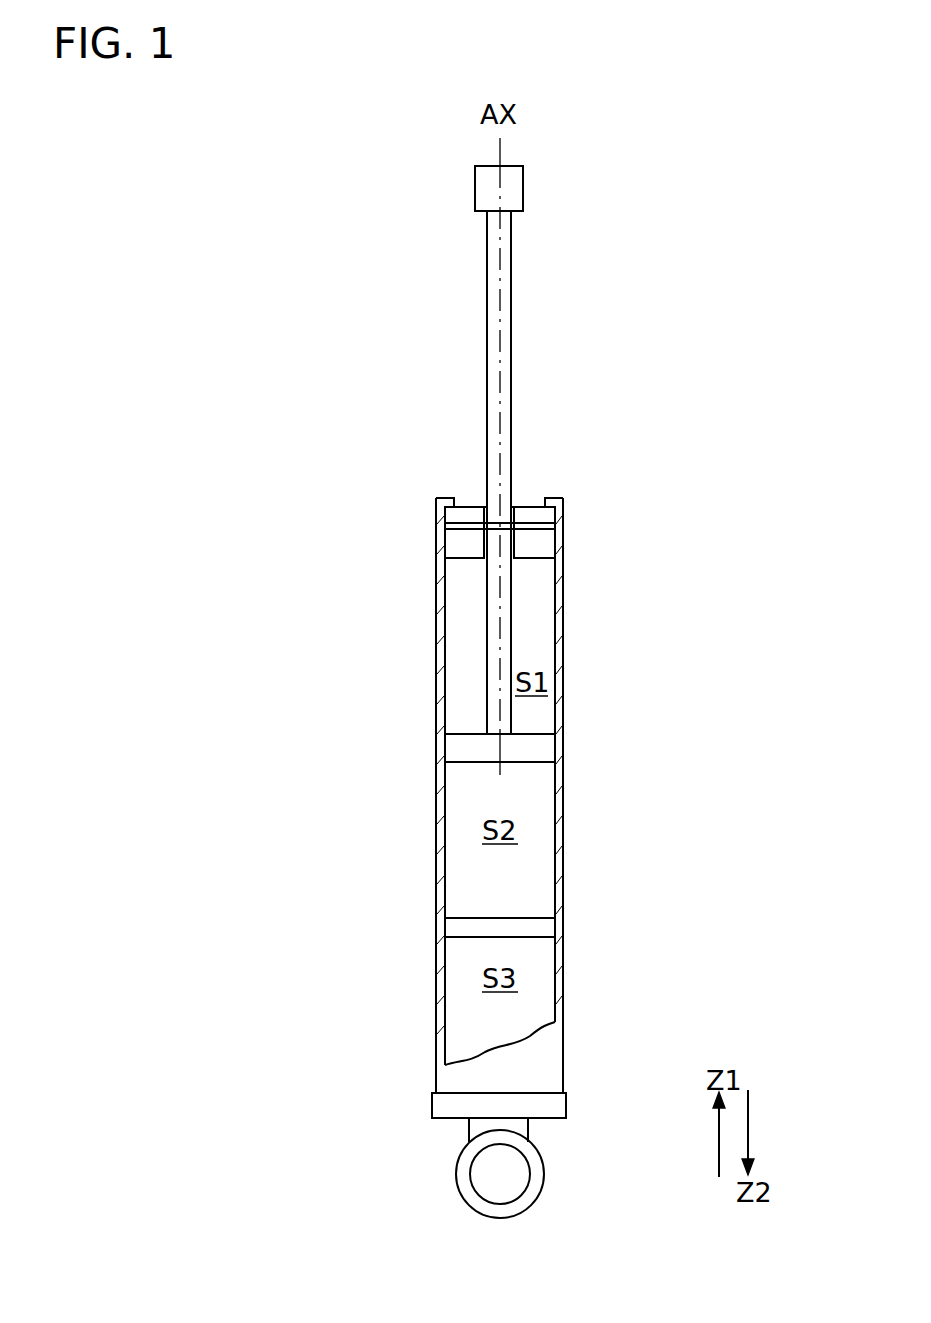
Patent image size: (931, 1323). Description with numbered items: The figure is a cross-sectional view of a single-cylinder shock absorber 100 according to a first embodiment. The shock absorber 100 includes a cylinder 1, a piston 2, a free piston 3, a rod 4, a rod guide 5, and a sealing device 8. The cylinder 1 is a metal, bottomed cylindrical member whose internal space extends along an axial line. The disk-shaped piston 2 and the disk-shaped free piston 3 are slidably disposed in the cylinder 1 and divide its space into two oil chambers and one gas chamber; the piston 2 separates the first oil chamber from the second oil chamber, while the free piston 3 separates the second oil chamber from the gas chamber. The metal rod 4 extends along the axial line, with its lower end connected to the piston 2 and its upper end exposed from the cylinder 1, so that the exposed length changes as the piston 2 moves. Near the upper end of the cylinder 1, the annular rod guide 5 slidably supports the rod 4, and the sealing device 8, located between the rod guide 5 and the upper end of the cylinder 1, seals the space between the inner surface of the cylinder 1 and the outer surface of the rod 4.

The shock absorber 100 is at (597, 442).
The cylinder 1 is at (563, 632).
The piston 2 is at (548, 750).
The free piston 3 is at (548, 930).
The rod 4 is at (511, 308).
The rod guide 5 is at (545, 538).
The sealing device 8 is at (470, 515).